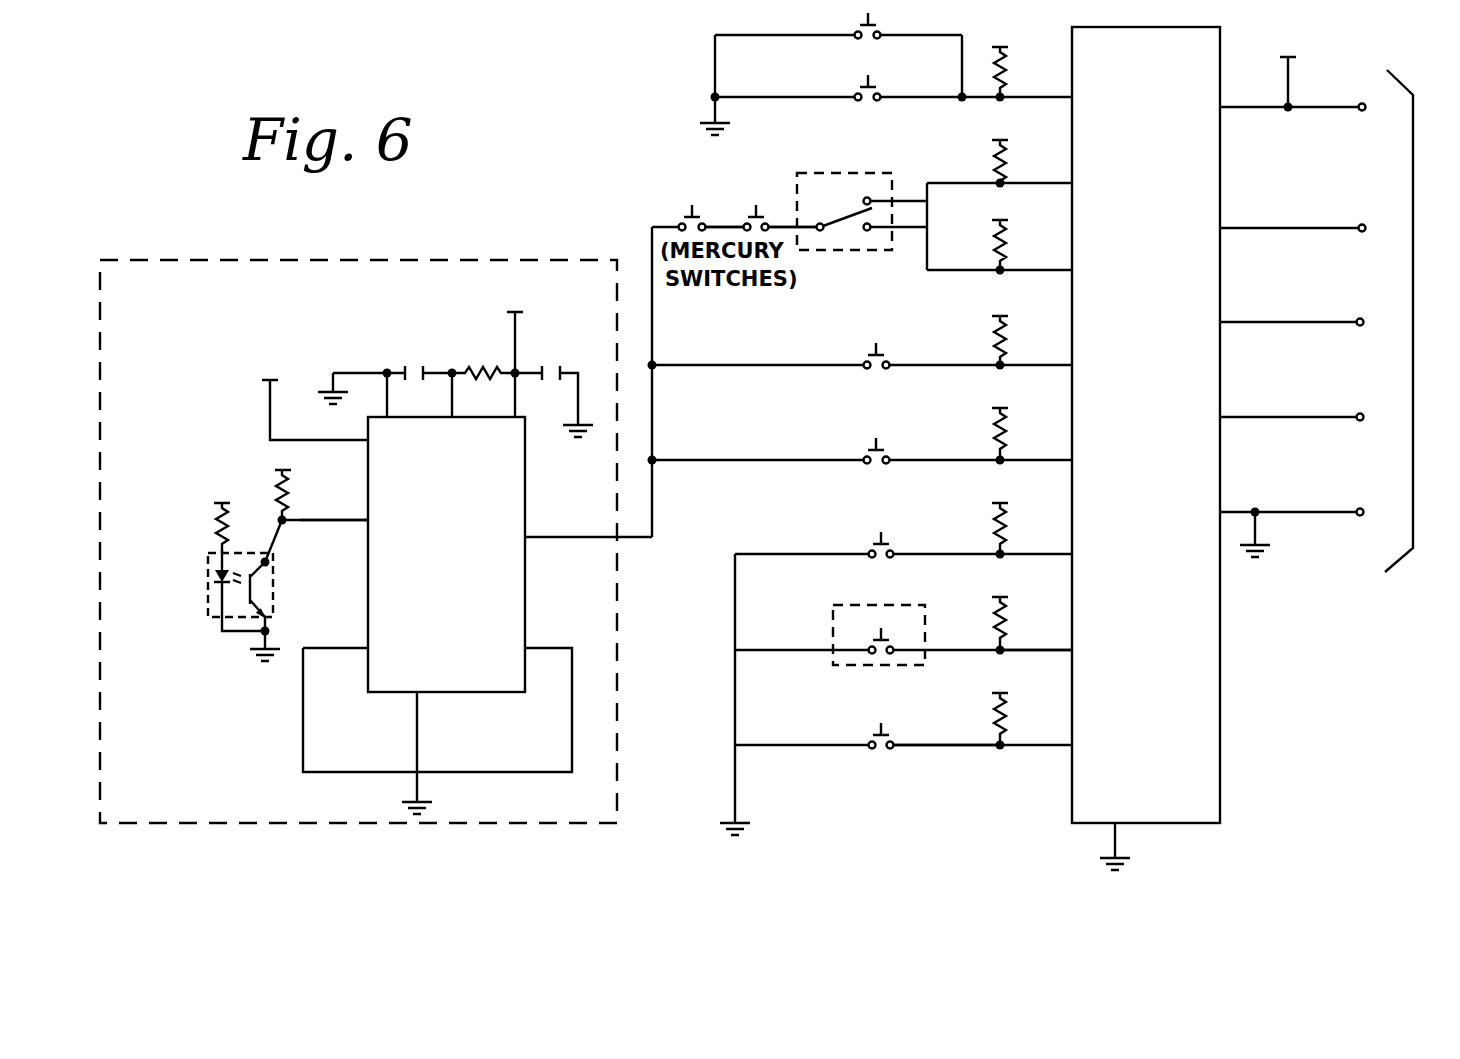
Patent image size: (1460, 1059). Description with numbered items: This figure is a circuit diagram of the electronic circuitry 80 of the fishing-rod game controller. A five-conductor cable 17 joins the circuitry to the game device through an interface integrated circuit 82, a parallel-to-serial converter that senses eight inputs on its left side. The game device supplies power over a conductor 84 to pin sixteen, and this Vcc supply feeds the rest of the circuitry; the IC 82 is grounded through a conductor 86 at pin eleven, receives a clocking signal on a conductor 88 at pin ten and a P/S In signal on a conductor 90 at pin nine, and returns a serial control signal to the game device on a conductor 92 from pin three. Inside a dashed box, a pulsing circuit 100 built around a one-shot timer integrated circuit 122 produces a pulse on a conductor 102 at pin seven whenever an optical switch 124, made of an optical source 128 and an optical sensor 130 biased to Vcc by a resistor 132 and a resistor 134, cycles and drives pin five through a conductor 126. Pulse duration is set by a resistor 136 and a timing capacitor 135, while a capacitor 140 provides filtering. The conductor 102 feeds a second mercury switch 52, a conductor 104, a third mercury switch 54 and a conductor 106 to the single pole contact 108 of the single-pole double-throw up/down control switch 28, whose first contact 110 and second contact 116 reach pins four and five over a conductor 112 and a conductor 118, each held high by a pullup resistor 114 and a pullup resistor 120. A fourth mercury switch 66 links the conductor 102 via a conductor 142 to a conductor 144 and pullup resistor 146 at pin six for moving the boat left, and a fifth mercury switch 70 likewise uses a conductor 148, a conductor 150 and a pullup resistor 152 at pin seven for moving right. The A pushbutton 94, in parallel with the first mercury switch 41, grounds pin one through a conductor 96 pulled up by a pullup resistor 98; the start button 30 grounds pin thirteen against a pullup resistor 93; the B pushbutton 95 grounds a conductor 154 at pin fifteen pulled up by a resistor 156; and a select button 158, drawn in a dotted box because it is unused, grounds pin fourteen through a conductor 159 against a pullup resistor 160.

The electronic circuitry 80 is at (628, 93).
The pulsing circuit 100 is at (299, 278).
The one-shot timer integrated circuit 122 is at (503, 467).
The conductor 102 is at (597, 540).
The optical switch 124 is at (200, 625).
The conductor 126 is at (330, 522).
The optical source 128 is at (213, 555).
The optical sensor 130 is at (274, 588).
The resistor 132 is at (215, 518).
The resistor 134 is at (288, 506).
The capacitor 135 is at (418, 362).
The resistor 136 is at (505, 366).
The capacitor 140 is at (564, 364).
The first mercury switch 41 is at (886, 25).
The A pushbutton 94 is at (858, 85).
The pullup resistor 98 is at (1018, 35).
The conductor 96 is at (1010, 82).
The interface integrated circuit 82 is at (1203, 38).
The conductor 84 is at (1337, 110).
The conductor 92 is at (1326, 230).
The conductor 88 is at (1340, 325).
The conductor 90 is at (1344, 420).
The conductor 86 is at (1327, 515).
The cable 17 is at (1414, 232).
The second mercury switch 52 is at (692, 216).
The third mercury switch 54 is at (765, 214).
The conductor 104 is at (738, 183).
The conductor 106 is at (794, 220).
The up/down control switch 28 is at (840, 172).
The first contact 110 is at (882, 178).
The second contact 116 is at (876, 235).
The single pole contact 108 is at (827, 240).
The pullup resistor 114 is at (1012, 135).
The conductor 112 is at (1020, 175).
The conductor 118 is at (946, 268).
The pullup resistor 120 is at (1012, 237).
The fourth mercury switch 66 is at (885, 350).
The conductor 142 is at (765, 363).
The conductor 144 is at (942, 363).
The pullup resistor 146 is at (1012, 330).
The fifth mercury switch 70 is at (885, 443).
The conductor 148 is at (775, 458).
The conductor 150 is at (942, 455).
The pullup resistor 152 is at (1012, 425).
The start button 30 is at (877, 543).
The pullup resistor 93 is at (1015, 525).
The select button 158 is at (845, 643).
The pullup resistor 160 is at (1015, 600).
The conductor 159 is at (1020, 645).
The B pushbutton 95 is at (877, 733).
The resistor 156 is at (990, 732).
The conductor 154 is at (1030, 741).